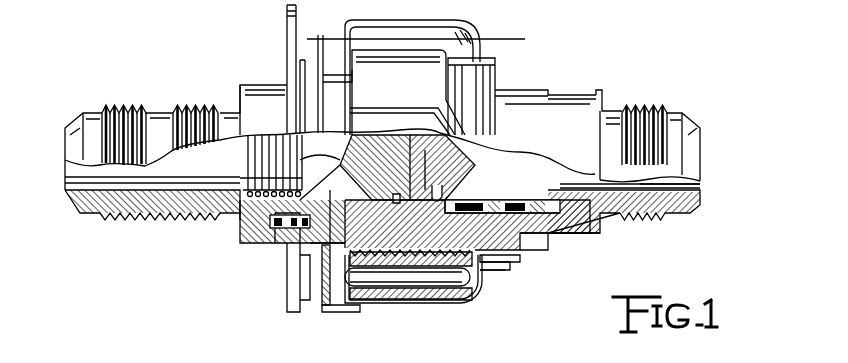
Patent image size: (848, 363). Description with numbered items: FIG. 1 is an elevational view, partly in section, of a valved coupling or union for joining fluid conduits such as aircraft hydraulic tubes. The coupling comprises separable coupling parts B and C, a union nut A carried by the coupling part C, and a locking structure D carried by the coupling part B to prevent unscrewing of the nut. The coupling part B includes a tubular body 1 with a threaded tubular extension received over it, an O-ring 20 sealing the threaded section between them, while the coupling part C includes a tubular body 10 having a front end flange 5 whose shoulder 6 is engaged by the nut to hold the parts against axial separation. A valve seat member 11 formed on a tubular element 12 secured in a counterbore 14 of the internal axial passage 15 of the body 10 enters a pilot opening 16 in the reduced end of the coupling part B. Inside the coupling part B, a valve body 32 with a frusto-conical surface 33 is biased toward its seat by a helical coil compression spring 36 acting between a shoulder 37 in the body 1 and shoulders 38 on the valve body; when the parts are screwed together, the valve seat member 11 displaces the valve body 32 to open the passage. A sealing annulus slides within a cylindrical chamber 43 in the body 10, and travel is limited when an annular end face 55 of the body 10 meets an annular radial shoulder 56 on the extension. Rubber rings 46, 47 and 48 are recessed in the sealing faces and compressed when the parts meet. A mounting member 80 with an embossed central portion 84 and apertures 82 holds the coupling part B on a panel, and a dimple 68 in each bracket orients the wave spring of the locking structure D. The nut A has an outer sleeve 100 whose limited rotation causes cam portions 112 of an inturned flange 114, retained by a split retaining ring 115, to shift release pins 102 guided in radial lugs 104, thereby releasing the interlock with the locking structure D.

The tubular body 1 is at (80, 213).
The tubular body 10 is at (690, 205).
The front end flange 5 is at (540, 258).
The shoulder 6 is at (319, 47).
The valve seat member 11 is at (413, 133).
The tubular element 12 is at (531, 200).
The counterbore 14 is at (557, 186).
The internal axial passage 15 is at (701, 181).
The pilot opening 16 is at (523, 173).
The O-ring 20 is at (283, 240).
The valve body 32 is at (347, 157).
The frusto-conical surface 33 is at (375, 167).
The helical coil compression spring 36 is at (262, 165).
The shoulder 37 is at (248, 177).
The shoulders 38 is at (294, 182).
The cylindrical chamber 43 is at (540, 240).
The rubber ring 46 is at (327, 204).
The rubber ring 47 is at (442, 167).
The rubber ring 48 is at (434, 169).
The annular end face 55 is at (490, 266).
The annular radial shoulder 56 is at (492, 256).
The dimple 68 is at (335, 312).
The mounting member 80 is at (285, 322).
The apertures 82 is at (287, 300).
The central portion 84 is at (295, 78).
The outer member or sleeve 100 is at (432, 313).
The release pins 102 is at (388, 303).
The radial ears or lugs 104 is at (366, 310).
The cam portions 112 is at (483, 119).
The inturned flange 114 is at (462, 36).
The split retaining ring 115 is at (492, 73).
The union nut A is at (490, 294).
The coupling part B is at (212, 238).
The coupling part C is at (596, 241).
The locking structure D is at (334, 330).